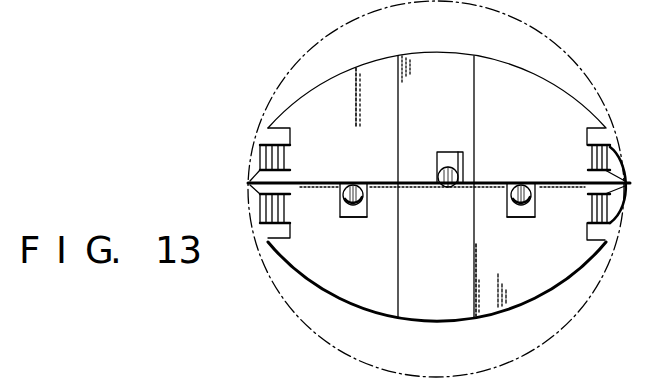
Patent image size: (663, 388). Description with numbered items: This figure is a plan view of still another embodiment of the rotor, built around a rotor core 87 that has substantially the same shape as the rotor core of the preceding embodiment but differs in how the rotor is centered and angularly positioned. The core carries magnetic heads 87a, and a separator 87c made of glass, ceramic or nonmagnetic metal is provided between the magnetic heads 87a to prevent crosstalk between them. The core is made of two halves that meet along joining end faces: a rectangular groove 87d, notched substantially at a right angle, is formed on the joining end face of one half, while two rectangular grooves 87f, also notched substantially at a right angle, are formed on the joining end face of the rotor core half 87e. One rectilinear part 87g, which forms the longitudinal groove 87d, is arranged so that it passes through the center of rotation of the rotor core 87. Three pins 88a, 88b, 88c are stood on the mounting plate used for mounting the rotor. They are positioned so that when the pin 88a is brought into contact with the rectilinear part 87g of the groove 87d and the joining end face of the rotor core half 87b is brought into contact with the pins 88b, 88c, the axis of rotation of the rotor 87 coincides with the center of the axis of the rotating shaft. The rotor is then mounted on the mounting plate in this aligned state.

The rotor core 87 is at (578, 62).
The magnetic heads 87a is at (248, 152).
The rotor core half 87b is at (373, 80).
The separator 87c is at (445, 66).
The rectangular groove 87d is at (460, 163).
The rotor core half 87e is at (436, 306).
The rectangular grooves 87f is at (352, 220).
The rectilinear part 87g is at (441, 152).
The pin 88a is at (459, 165).
The pin 88b is at (353, 183).
The pin 88c is at (524, 183).